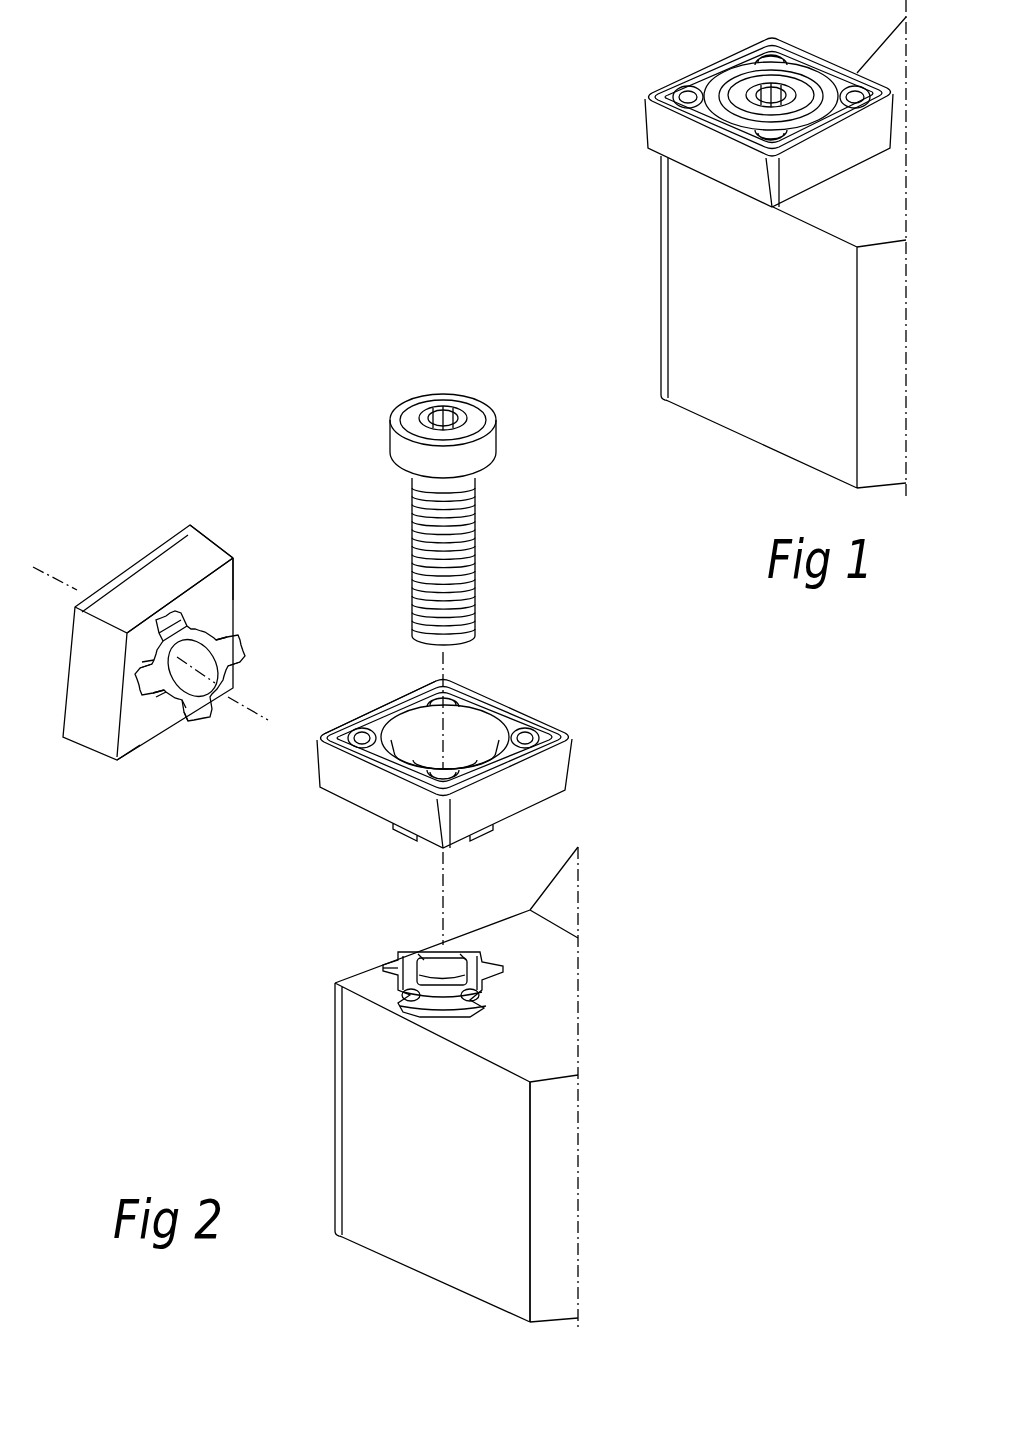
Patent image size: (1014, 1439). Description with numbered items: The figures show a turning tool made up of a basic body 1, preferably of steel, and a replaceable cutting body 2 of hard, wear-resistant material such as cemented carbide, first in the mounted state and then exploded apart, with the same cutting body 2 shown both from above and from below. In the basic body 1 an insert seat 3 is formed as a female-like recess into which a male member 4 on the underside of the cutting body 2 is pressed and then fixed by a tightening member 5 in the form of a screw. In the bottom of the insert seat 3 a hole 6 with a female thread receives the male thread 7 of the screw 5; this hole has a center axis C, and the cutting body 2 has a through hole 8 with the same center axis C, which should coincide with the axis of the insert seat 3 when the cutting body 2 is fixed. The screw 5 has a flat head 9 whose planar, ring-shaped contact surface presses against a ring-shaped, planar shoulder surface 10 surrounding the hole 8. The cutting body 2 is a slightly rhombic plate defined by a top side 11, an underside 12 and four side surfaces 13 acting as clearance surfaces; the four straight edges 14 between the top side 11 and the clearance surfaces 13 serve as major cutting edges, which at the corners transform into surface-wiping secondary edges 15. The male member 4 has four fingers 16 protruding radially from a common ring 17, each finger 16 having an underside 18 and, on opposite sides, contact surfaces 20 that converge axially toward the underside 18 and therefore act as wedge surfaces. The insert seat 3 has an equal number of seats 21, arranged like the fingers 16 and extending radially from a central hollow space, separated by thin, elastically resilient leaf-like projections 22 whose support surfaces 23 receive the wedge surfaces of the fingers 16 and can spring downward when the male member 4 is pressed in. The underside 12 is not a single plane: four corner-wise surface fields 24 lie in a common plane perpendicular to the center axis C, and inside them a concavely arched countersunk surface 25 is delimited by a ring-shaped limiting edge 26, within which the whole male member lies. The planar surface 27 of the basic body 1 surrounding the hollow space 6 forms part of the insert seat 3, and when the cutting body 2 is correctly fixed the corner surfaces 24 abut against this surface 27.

In FIG. 1, the basic body 1 is at (658, 254).
In FIG. 2, the basic body 1 is at (413, 1088).
In FIG. 1, the cutting body 2 is at (695, 57).
In FIG. 2, the cutting body 2 is at (348, 667).
In FIG. 2, the insert seat 3 is at (451, 979).
In FIG. 2, the male member 4 is at (197, 724).
In FIG. 2, the tightening member 5 is at (451, 492).
In FIG. 2, the hole 6 is at (415, 1013).
In FIG. 2, the male thread 7 is at (475, 573).
In FIG. 2, the through hole 8 is at (434, 762).
In FIG. 2, the head 9 is at (497, 453).
In FIG. 2, the shoulder surface 10 is at (460, 748).
In FIG. 2, the top side 11 is at (527, 727).
In FIG. 2, the underside 12 is at (352, 806).
In FIG. 2, the side surfaces 13 is at (150, 592).
In FIG. 2, the edges 14 is at (530, 762).
In FIG. 2, the secondary edges 15 is at (574, 743).
In FIG. 2, the fingers 16 is at (232, 650).
In FIG. 2, the ring 17 is at (160, 648).
In FIG. 2, the underside 18 is at (157, 690).
In FIG. 2, the contact surfaces 20 is at (165, 632).
In FIG. 2, the seats 21 is at (397, 965).
In FIG. 2, the projections 22 is at (450, 973).
In FIG. 2, the support surfaces 23 is at (422, 965).
In FIG. 2, the surface fields 24 is at (225, 590).
In FIG. 2, the countersunk surface 25 is at (152, 718).
In FIG. 2, the limiting edge 26 is at (210, 595).
In FIG. 2, the surface 27 is at (528, 1042).
In FIG. 2, the center axis C is at (446, 878).